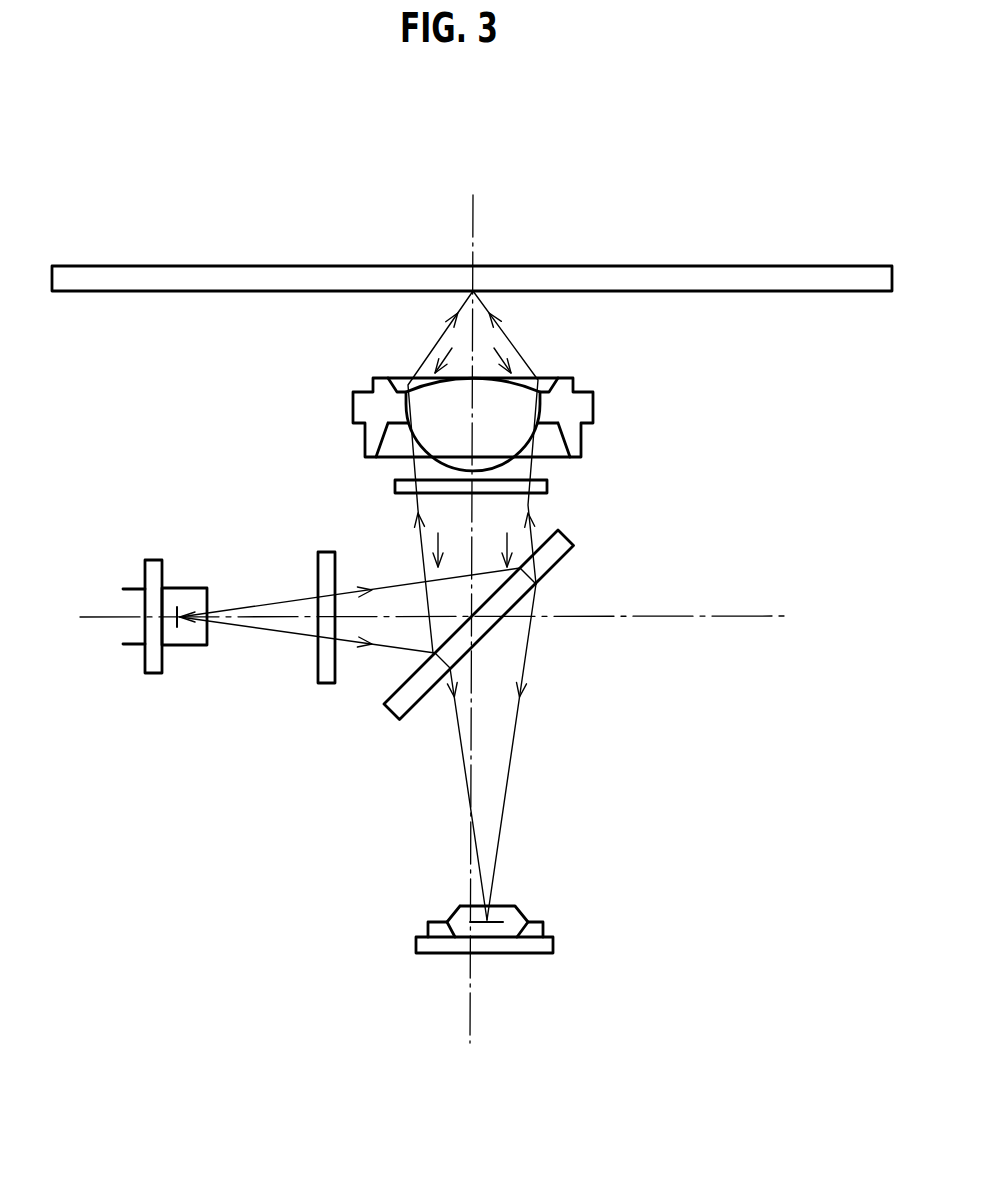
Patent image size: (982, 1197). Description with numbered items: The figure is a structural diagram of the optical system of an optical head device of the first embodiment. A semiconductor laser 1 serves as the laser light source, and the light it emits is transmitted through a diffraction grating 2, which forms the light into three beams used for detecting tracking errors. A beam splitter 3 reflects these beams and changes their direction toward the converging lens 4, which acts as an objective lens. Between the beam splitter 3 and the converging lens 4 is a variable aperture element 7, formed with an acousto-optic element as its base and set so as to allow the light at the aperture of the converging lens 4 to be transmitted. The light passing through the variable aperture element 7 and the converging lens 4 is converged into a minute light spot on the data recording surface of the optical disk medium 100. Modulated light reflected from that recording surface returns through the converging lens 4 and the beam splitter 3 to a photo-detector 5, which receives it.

The optical disk medium 100 is at (224, 266).
The semiconductor laser 1 is at (185, 588).
The diffraction grating 2 is at (328, 552).
The beam splitter 3 is at (575, 541).
The converging lens 4 is at (593, 404).
The variable aperture element 7 is at (547, 487).
The photo-detector 5 is at (523, 908).